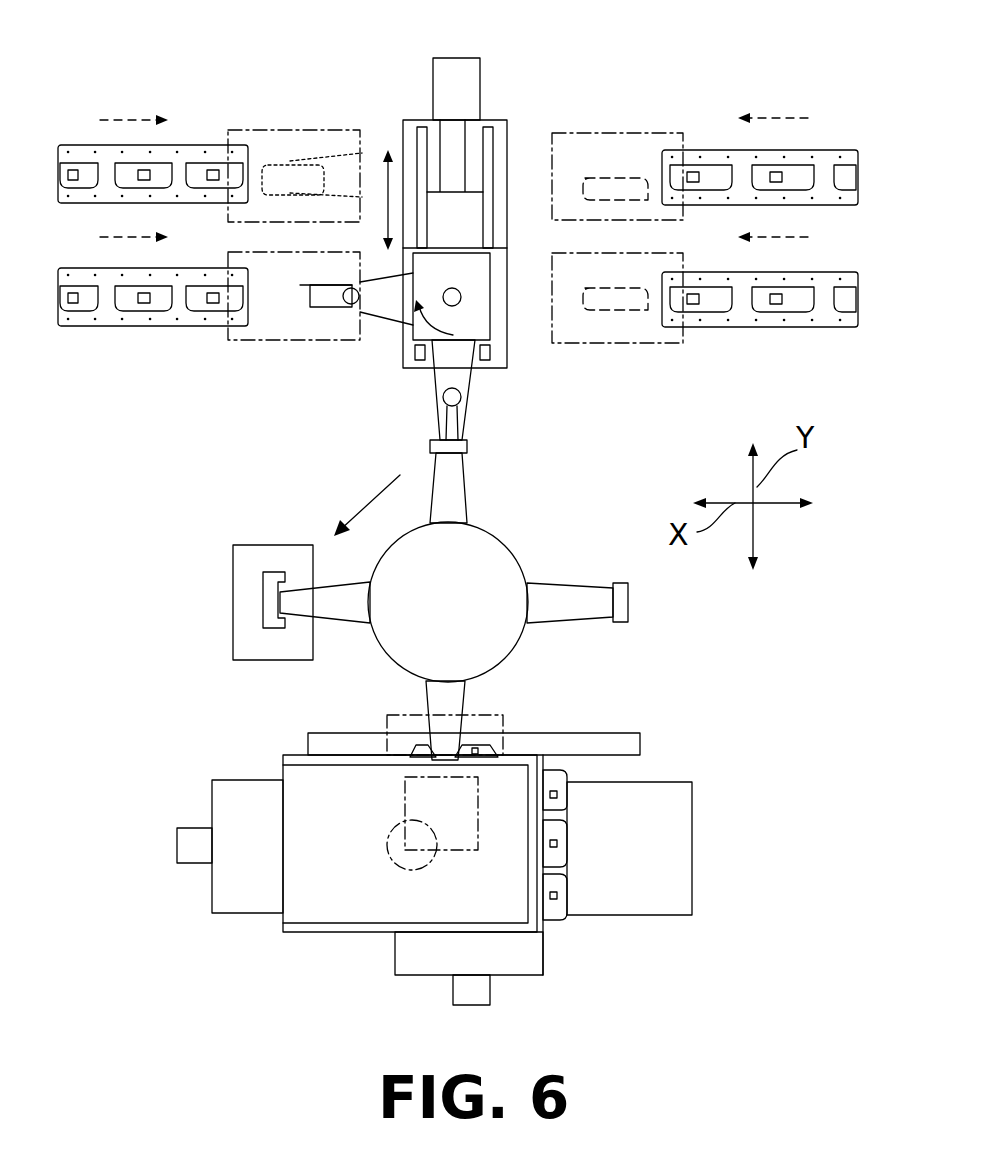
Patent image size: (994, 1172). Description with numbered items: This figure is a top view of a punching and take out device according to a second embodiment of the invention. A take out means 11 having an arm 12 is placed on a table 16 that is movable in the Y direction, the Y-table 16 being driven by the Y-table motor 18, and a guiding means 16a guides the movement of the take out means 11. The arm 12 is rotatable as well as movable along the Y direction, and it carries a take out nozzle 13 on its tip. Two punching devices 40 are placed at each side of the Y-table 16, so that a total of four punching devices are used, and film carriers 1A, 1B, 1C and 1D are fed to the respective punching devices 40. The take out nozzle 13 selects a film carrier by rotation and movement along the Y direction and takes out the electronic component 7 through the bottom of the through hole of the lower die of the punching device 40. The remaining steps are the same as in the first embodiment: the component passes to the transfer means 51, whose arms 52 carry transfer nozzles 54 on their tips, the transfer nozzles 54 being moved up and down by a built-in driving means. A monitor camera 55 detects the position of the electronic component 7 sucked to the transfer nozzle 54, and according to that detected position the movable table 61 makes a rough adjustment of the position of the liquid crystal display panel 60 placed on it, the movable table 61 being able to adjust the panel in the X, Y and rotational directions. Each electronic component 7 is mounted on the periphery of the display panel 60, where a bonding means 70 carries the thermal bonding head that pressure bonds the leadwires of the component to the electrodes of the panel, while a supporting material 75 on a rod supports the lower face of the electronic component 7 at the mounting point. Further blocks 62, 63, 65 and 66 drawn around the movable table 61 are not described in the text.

The film carrier 1A is at (110, 145).
The film carrier 1B is at (150, 327).
The film carrier 1C is at (826, 150).
The film carrier 1D is at (752, 327).
The punching device 40 is at (282, 130).
The electronic component 7 is at (276, 292).
The take out means 11 is at (475, 335).
The arm 12 is at (392, 305).
The take out nozzle 13 is at (264, 328).
The Y-table 16 is at (507, 150).
The guiding means 16a is at (483, 147).
The Y-table motor 18 is at (480, 93).
The transfer means 51 is at (498, 638).
The arm 52 is at (460, 497).
The transfer nozzle 54 is at (628, 600).
The monitor camera 55 is at (233, 630).
The liquid crystal display panel 60 is at (365, 915).
The movable table 61 is at (258, 938).
The side block 62 is at (212, 895).
The lower block 63 is at (527, 950).
The connector 65 is at (177, 838).
The lower connector 66 is at (478, 993).
The bonding means 70 is at (405, 790).
The supporting material 75 is at (640, 748).